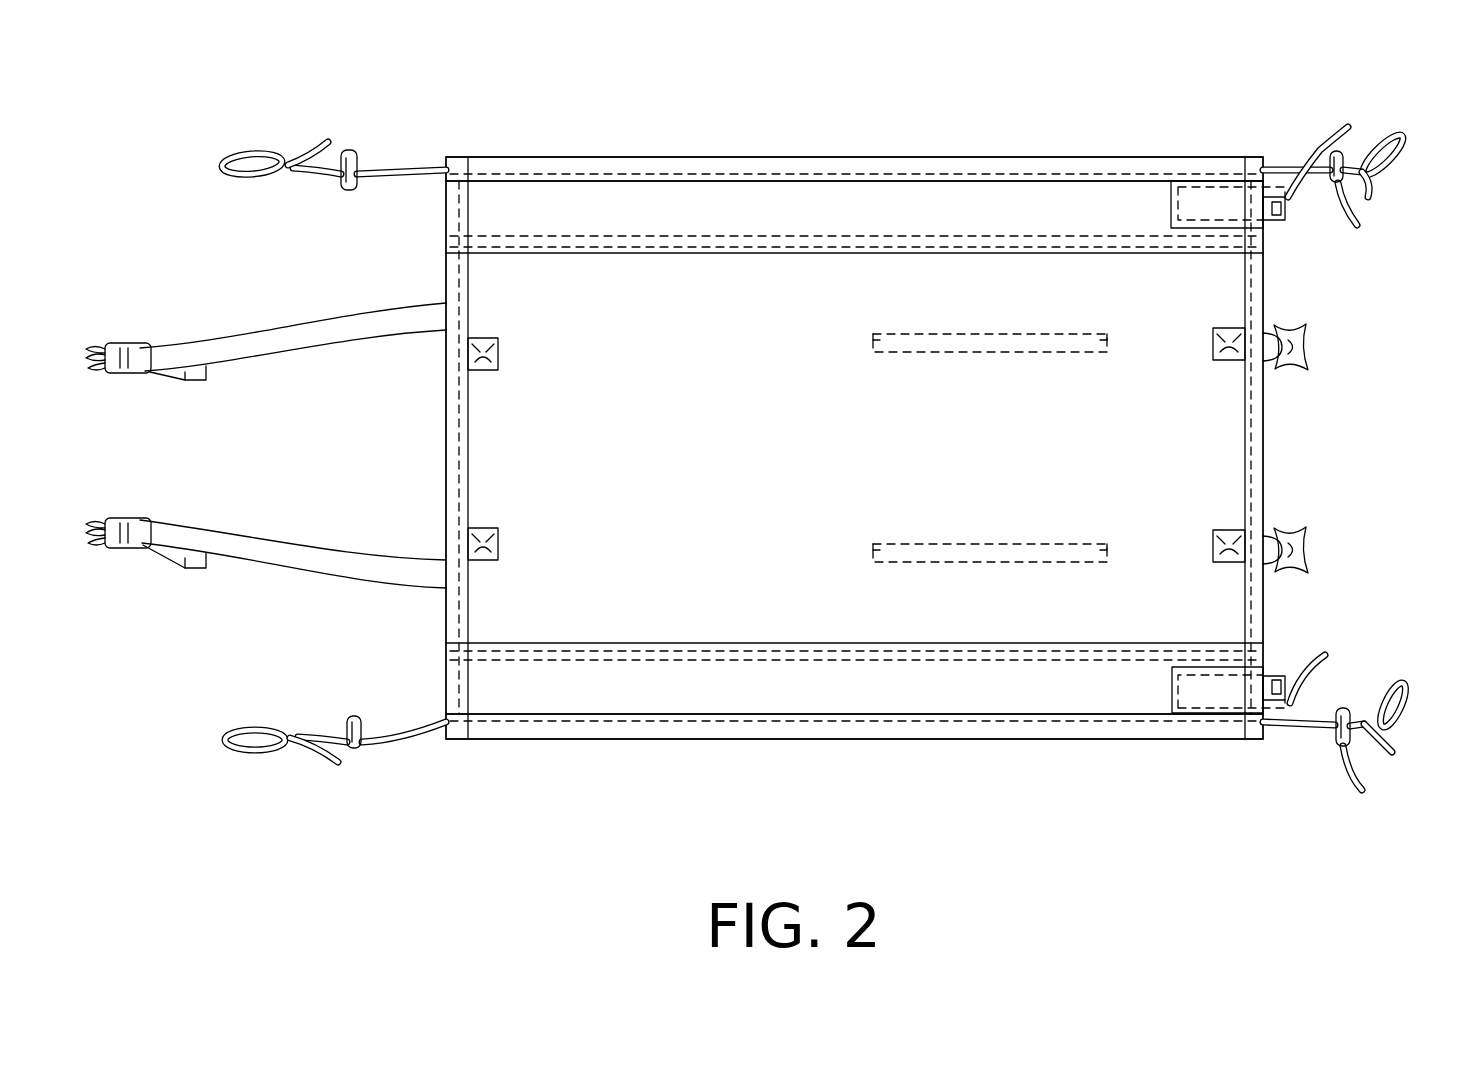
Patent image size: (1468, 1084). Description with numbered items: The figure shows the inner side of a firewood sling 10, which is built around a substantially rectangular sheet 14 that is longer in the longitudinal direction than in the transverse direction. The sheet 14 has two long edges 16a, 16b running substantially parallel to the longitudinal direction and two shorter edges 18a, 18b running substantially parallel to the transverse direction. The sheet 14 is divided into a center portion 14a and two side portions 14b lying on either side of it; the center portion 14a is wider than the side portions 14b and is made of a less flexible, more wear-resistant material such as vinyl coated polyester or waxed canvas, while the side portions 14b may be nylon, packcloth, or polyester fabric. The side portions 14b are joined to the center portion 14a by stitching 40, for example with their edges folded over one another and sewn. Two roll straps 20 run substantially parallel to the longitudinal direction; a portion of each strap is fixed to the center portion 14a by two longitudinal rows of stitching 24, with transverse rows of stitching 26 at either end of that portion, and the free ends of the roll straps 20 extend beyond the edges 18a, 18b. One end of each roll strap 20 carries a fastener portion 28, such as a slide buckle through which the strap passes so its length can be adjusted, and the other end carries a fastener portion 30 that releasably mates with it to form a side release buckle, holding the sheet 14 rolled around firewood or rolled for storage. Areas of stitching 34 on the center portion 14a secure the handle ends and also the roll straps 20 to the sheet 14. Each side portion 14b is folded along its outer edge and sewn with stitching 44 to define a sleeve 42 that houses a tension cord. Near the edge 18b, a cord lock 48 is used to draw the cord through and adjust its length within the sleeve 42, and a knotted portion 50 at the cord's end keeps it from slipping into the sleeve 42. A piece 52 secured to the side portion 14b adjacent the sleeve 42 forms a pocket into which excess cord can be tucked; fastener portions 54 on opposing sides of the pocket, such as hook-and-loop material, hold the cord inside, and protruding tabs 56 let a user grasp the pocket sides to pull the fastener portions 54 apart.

The firewood sling 10 is at (494, 114).
The sheet 14 is at (1270, 294).
The center portion 14a is at (625, 436).
The side portions 14b is at (636, 450).
The edge 16a is at (616, 156).
The edge 16b is at (826, 740).
The edge 18a is at (445, 446).
The edge 18b is at (1265, 440).
The roll straps 20 is at (318, 321).
The rows of stitching 24 is at (956, 334).
The rows of stitching 26 is at (873, 337).
The fastener portion 28 is at (118, 343).
The fastener portion 30 is at (1305, 330).
The stitching 34 is at (499, 345).
The stitching 40 is at (667, 240).
The sleeve 42 is at (1086, 166).
The stitching 44 is at (946, 176).
The cord lock 48 is at (846, 477).
The knotted portion 50 is at (1400, 150).
The piece 52 is at (1200, 200).
The fastener portions 54 is at (1246, 230).
The tabs 56 is at (1336, 408).